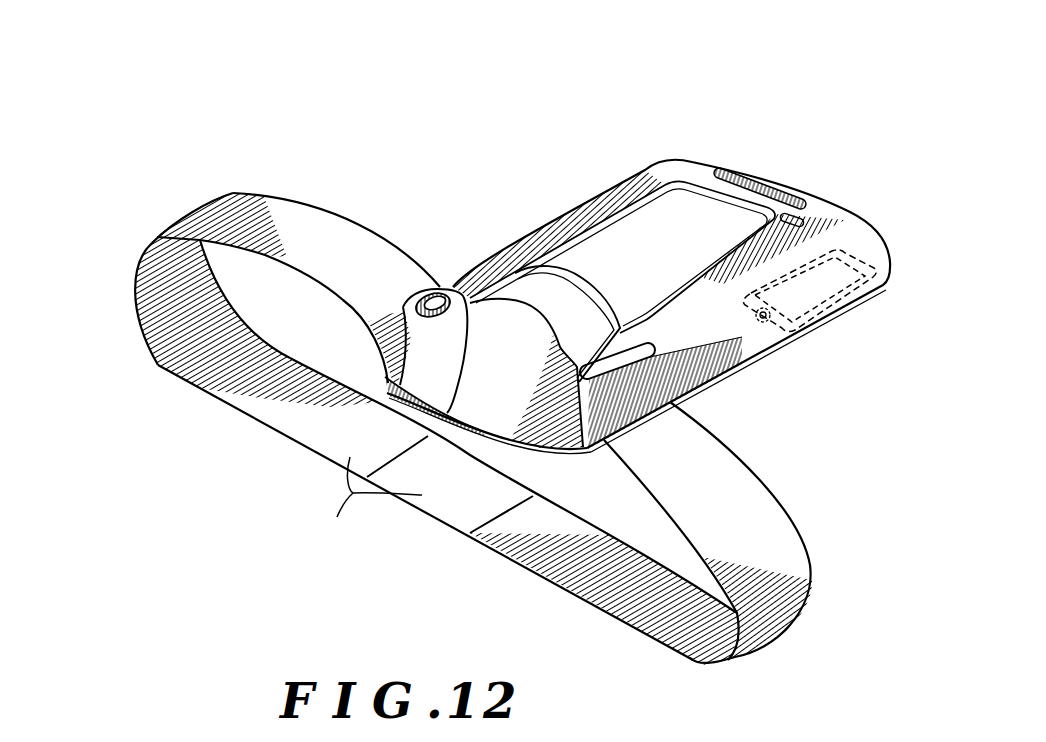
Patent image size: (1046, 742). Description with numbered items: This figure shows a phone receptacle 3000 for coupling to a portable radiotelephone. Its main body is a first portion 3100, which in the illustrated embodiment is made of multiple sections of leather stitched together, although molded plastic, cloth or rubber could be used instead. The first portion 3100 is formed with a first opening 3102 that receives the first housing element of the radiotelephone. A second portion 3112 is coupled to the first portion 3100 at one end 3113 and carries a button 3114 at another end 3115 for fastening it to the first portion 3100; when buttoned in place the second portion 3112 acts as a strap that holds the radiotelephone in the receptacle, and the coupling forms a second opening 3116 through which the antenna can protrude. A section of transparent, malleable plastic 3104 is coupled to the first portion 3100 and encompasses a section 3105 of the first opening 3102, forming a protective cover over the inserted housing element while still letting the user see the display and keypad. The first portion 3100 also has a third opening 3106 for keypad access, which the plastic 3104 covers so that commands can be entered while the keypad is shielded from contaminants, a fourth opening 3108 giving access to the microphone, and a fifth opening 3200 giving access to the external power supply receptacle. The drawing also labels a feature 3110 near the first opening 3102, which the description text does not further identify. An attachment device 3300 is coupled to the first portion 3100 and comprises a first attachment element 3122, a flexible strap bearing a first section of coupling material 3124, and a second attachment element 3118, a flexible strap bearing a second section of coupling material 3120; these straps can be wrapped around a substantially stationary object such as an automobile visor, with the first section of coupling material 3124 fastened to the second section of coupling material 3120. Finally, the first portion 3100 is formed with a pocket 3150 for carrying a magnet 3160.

The phone receptacle 3000 is at (828, 52).
The first portion 3100 is at (728, 370).
The first opening 3102 is at (522, 434).
The section of transparent, malleable plastic 3104 is at (513, 283).
The section of the first opening 3105 is at (700, 385).
The third opening 3106 is at (712, 197).
The fourth opening 3108 is at (806, 218).
The slot 3110 is at (653, 385).
The second portion 3112 is at (421, 425).
The one end 3113 is at (488, 428).
The button 3114 is at (439, 290).
The another end 3115 is at (412, 298).
The second opening 3116 is at (385, 350).
The second attachment element 3118 is at (146, 269).
The second section of coupling material 3120 is at (144, 333).
The first attachment element 3122 is at (565, 578).
The first section of coupling material 3124 is at (470, 520).
The pocket 3150 is at (813, 316).
The magnet 3160 is at (843, 273).
The fifth opening 3200 is at (766, 184).
The attachment device 3300 is at (363, 503).